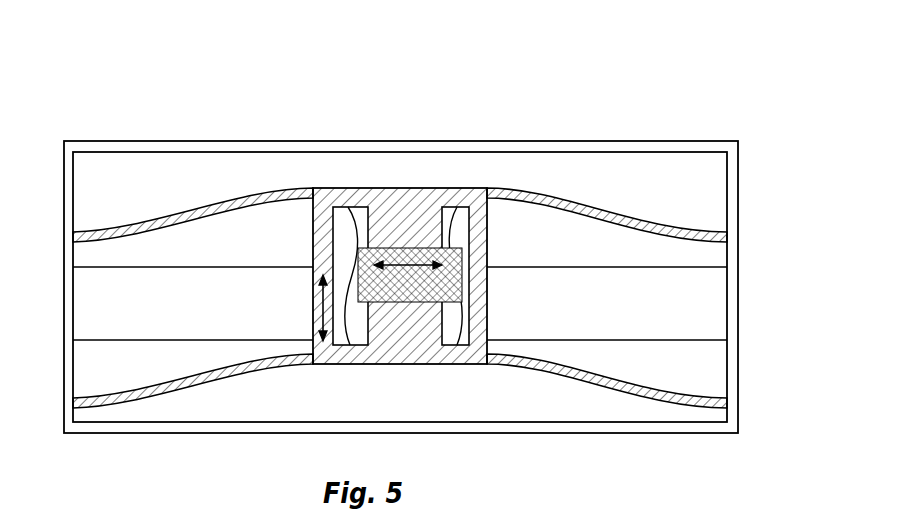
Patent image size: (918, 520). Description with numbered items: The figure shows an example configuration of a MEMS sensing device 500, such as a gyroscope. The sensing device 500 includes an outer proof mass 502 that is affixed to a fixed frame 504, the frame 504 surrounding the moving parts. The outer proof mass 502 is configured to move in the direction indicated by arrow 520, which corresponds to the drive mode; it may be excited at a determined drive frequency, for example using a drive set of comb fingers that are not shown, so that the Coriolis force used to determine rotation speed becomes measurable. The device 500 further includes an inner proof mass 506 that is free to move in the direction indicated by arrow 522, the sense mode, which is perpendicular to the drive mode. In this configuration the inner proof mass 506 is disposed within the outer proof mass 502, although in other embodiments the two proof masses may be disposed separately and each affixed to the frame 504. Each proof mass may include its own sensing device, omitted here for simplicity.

The MEMS sensing device 500 is at (622, 50).
The outer proof mass 502 is at (292, 190).
The fixed frame 504 is at (738, 238).
The inner proof mass 506 is at (390, 248).
The arrow 520 is at (320, 297).
The arrow 522 is at (412, 265).